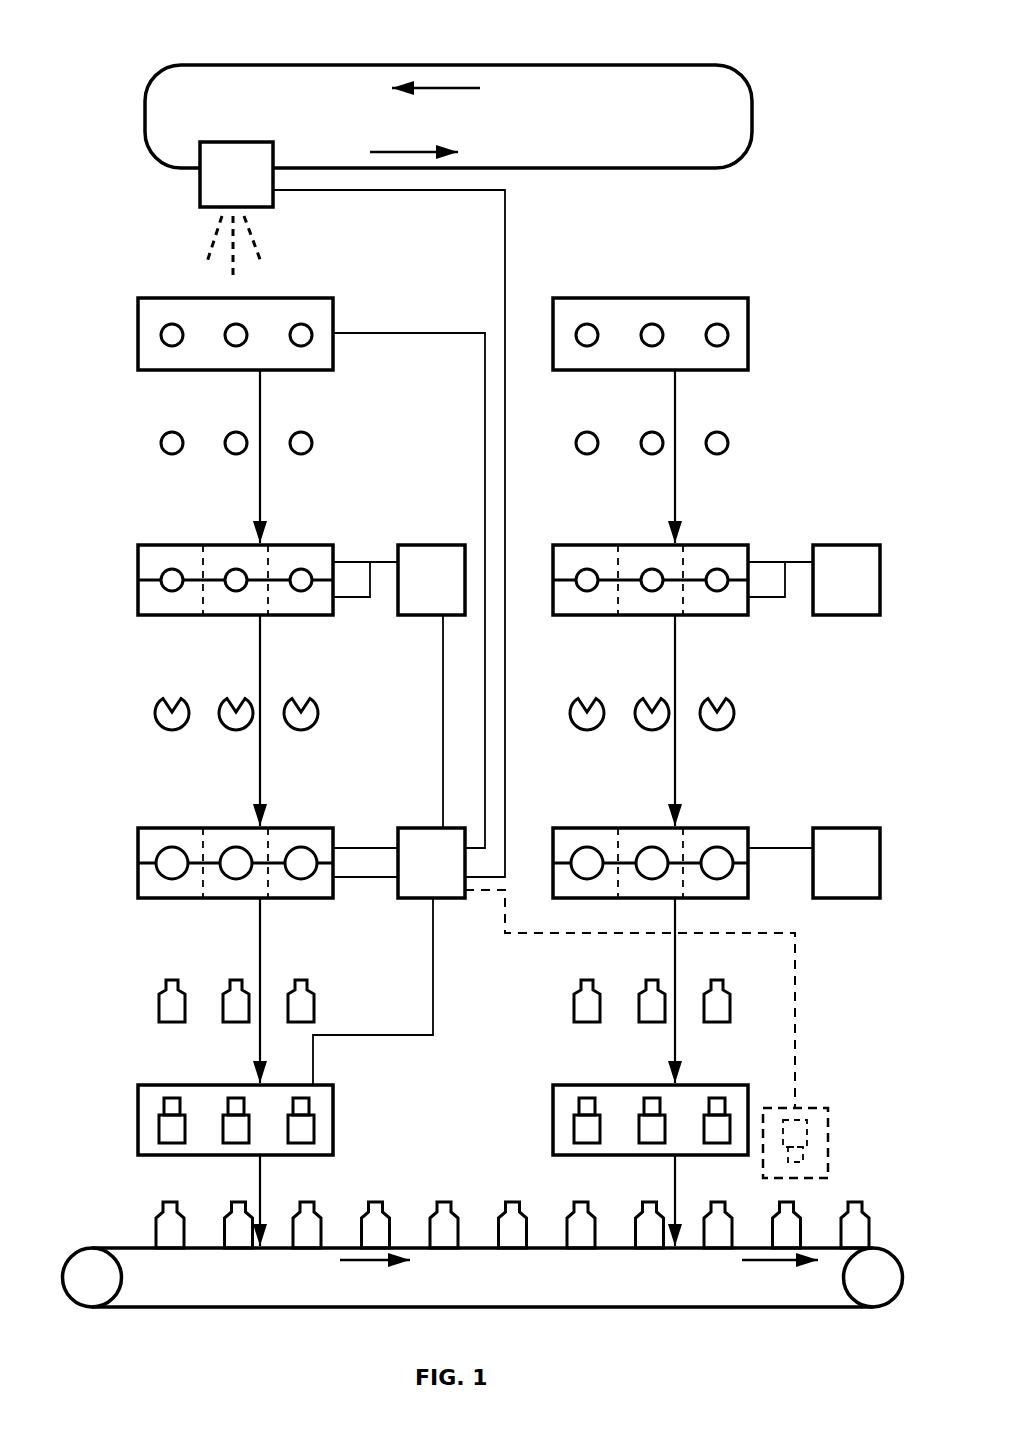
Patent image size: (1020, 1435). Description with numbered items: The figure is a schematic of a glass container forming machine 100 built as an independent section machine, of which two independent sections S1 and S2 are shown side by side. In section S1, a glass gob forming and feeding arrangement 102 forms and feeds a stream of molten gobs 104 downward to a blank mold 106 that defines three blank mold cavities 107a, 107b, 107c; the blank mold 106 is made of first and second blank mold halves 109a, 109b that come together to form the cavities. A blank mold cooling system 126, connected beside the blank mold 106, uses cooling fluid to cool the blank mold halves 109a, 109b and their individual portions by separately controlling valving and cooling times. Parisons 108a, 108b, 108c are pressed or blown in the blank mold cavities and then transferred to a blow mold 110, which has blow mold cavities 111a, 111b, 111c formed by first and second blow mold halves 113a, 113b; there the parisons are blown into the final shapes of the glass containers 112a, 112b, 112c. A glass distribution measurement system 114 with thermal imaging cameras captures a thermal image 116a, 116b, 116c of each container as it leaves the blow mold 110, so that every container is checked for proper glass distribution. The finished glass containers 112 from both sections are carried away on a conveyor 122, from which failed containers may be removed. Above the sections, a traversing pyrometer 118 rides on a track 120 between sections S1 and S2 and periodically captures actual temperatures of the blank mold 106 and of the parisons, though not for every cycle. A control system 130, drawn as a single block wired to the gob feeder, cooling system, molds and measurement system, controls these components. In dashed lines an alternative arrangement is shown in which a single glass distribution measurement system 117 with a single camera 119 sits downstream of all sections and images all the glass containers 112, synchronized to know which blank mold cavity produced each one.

The glass container forming machine 100 is at (748, 44).
The track 120 is at (146, 110).
The traversing pyrometer 118 is at (200, 196).
The independent section S1 is at (385, 282).
The independent section S2 is at (803, 282).
The glass gob forming and feeding arrangement 102 is at (140, 308).
The molten gobs 104 is at (165, 432).
The blank mold 106 is at (191, 566).
The blank mold cavity 107a is at (172, 580).
The blank mold cavity 107b is at (236, 580).
The blank mold cavity 107c is at (301, 580).
The first blank mold half 109a is at (347, 551).
The second blank mold half 109b is at (347, 609).
The blank mold cooling system 126 is at (458, 545).
The parison 108a is at (153, 716).
The parison 108b is at (222, 728).
The parison 108c is at (318, 716).
The blow mold 110 is at (192, 850).
The blow mold cavity 111a is at (172, 863).
The blow mold cavity 111b is at (236, 863).
The blow mold cavity 111c is at (301, 863).
The first blow mold half 113a is at (347, 837).
The second blow mold half 113b is at (347, 896).
The control system 130 is at (450, 898).
The glass container 112a is at (157, 1000).
The glass container 112b is at (222, 1010).
The glass container 112c is at (315, 1000).
The glass distribution measurement system 114 is at (222, 1136).
The thermal image 116a is at (158, 1135).
The thermal image 116b is at (222, 1143).
The thermal image 116c is at (315, 1135).
The single glass distribution measurement system 117 is at (830, 1126).
The single camera 119 is at (808, 1130).
The glass containers 112 is at (172, 1230).
The conveyor 122 is at (340, 1290).